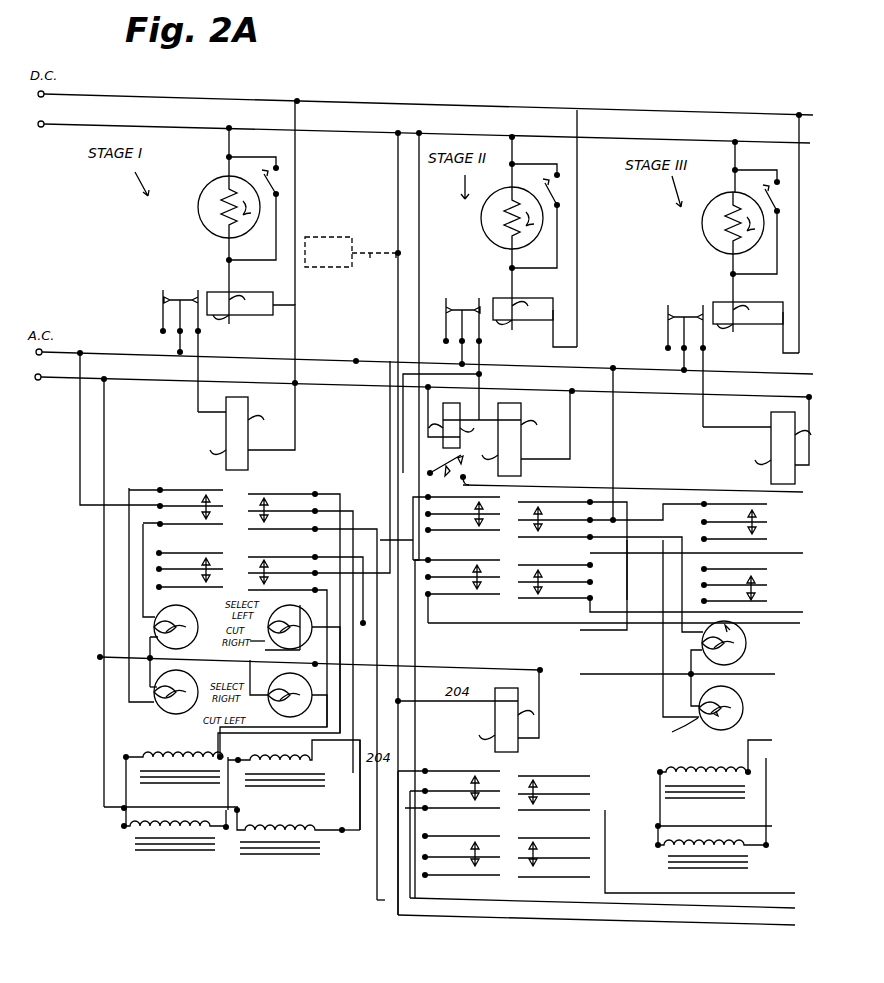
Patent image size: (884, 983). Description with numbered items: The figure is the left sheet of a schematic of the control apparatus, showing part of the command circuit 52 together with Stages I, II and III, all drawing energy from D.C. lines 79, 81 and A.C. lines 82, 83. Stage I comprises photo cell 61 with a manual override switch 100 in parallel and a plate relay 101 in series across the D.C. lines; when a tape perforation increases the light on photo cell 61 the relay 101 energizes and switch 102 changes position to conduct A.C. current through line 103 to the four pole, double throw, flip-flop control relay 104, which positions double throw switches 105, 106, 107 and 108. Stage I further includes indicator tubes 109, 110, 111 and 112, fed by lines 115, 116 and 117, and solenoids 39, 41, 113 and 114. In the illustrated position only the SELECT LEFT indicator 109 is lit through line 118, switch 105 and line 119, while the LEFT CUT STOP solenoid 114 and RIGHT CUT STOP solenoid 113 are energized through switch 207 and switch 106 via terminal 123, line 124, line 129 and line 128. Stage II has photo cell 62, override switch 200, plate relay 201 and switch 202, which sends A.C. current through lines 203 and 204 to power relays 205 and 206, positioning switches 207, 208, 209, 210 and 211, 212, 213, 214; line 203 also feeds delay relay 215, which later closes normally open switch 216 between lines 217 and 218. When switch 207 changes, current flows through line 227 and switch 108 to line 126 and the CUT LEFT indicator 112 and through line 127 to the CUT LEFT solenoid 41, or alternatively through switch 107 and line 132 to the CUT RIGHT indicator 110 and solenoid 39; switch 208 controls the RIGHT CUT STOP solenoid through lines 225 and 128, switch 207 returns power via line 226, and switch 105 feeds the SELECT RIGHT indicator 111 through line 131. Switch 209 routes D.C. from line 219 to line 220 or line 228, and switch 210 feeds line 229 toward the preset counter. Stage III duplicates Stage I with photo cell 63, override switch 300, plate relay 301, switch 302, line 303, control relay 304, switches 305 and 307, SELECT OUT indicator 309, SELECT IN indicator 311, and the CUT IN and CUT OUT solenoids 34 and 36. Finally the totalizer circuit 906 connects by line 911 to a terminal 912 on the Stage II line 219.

The D.C. line 79 is at (130, 94).
The D.C. line 81 is at (169, 125).
The A.C. line 82 is at (97, 354).
The A.C. line 83 is at (154, 379).
The photo cell 61 is at (206, 222).
The photo cell 62 is at (492, 225).
The photo cell 63 is at (714, 235).
The manual override switch 100 is at (281, 178).
The manual override switch 200 is at (560, 186).
The manual override switch 300 is at (780, 204).
The plate relay 101 is at (238, 290).
The plate relay 201 is at (558, 302).
The plate relay 301 is at (780, 305).
The switch 102 is at (163, 308).
The switch 202 is at (457, 310).
The switch 302 is at (680, 317).
The line 103 is at (198, 353).
The line 203 is at (482, 414).
The line 303 is at (704, 358).
The flip-flop control relay 104 is at (224, 423).
The line 204 is at (450, 360).
The flip-flop control relay 304 is at (771, 437).
The double throw switch 105 is at (226, 492).
The double throw switch 106 is at (248, 498).
The double throw switch 107 is at (228, 556).
The double throw switch 108 is at (246, 560).
The SELECT LEFT indicator 109 is at (222, 607).
The CUT RIGHT indicator 110 is at (292, 606).
The SELECT RIGHT indicator 111 is at (188, 684).
The CUT LEFT indicator 112 is at (266, 686).
The RIGHT CUT STOP solenoid 113 is at (277, 852).
The LEFT CUT STOP solenoid 114 is at (262, 780).
The line 115 is at (104, 572).
The line 116 is at (112, 662).
The line 117 is at (256, 654).
The line 118 is at (129, 584).
The line 119 is at (94, 506).
The terminal 123 is at (353, 532).
The line 124 is at (354, 698).
The line 126 is at (352, 610).
The line 127 is at (342, 734).
The line 128 is at (360, 818).
The line 129 is at (334, 494).
The line 131 is at (128, 617).
The line 132 is at (210, 726).
The CUT RIGHT solenoid 39 is at (152, 780).
The CUT LEFT solenoid 41 is at (170, 844).
The CUT IN solenoid 34 is at (684, 787).
The CUT OUT solenoid 36 is at (722, 866).
The flip-flop power relay 205 is at (521, 448).
The flip-flop power relay 206 is at (490, 712).
The double throw switch 207 is at (507, 507).
The double throw switch 208 is at (516, 510).
The double throw switch 209 is at (498, 562).
The double throw switch 210 is at (572, 562).
The double throw switch 211 is at (495, 770).
The double throw switch 212 is at (560, 772).
The double throw switch 213 is at (496, 836).
The double throw switch 214 is at (560, 836).
The delay relay 215 is at (470, 400).
The normally open switch 216 is at (448, 468).
The line 217 is at (414, 264).
The line 218 is at (648, 492).
The line 219 is at (398, 187).
The line 220 is at (448, 622).
The line 225 is at (626, 592).
The line 226 is at (414, 538).
The line 227 is at (377, 494).
The line 228 is at (466, 910).
The line 229 is at (624, 902).
The double throw switch 305 is at (754, 531).
The double throw switch 307 is at (754, 590).
The SELECT OUT indicator 309 is at (732, 662).
The SELECT IN indicator 311 is at (736, 720).
The totalizer circuit 906 is at (346, 265).
The line 911 is at (376, 256).
The terminal 912 is at (392, 260).
The command circuit 52 is at (387, 902).